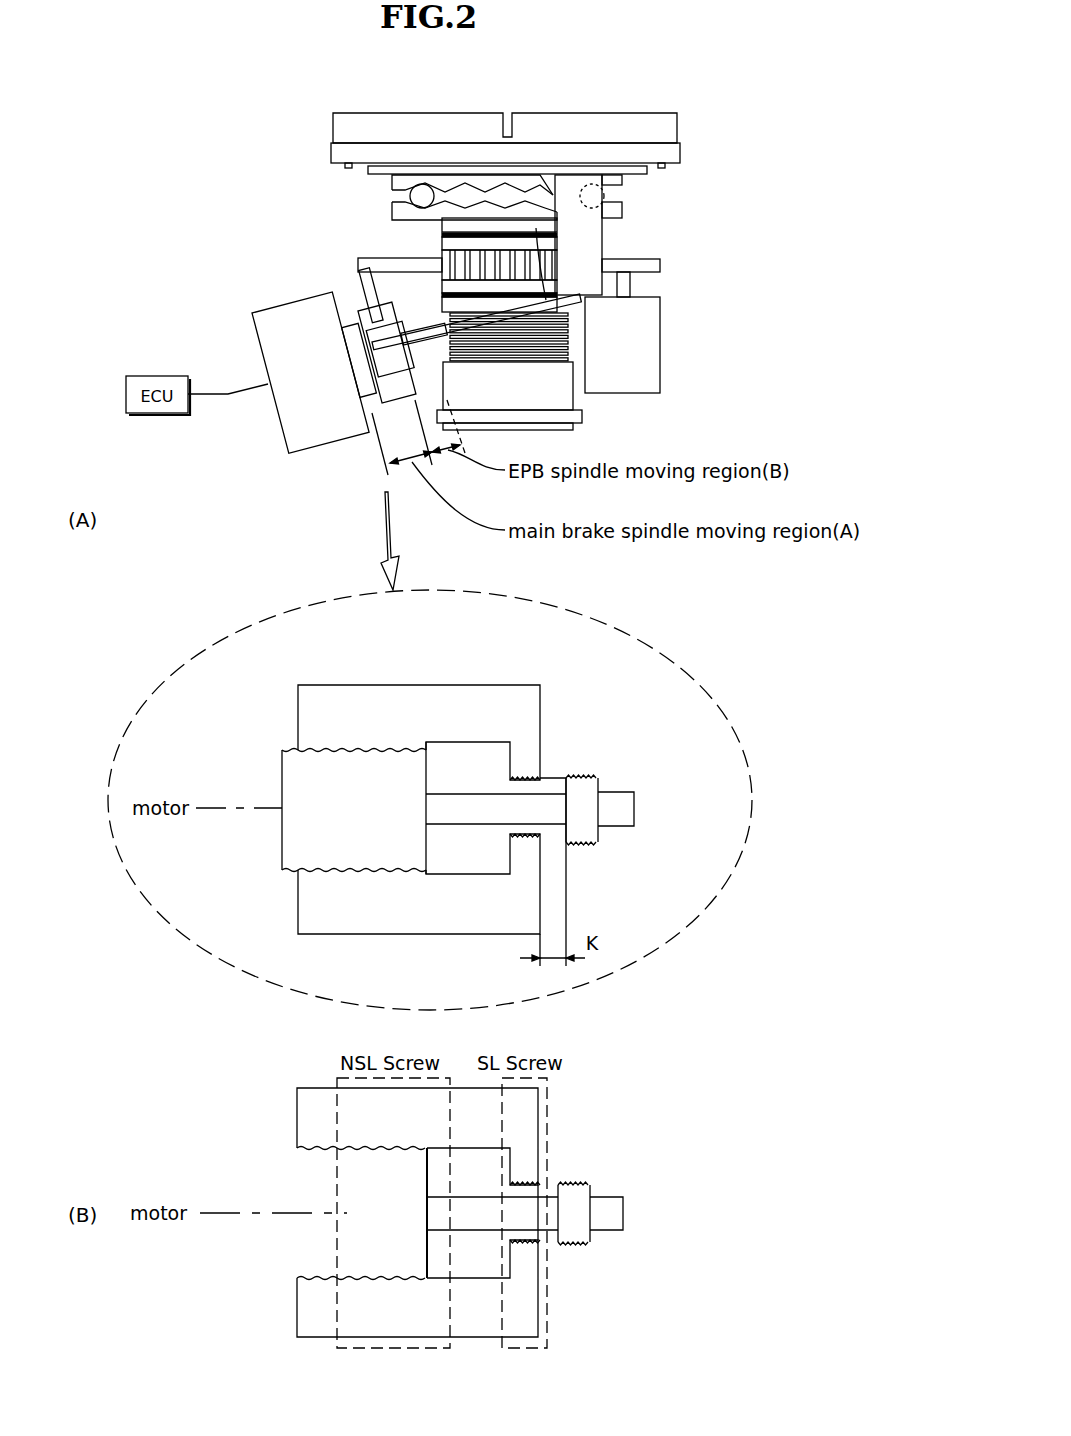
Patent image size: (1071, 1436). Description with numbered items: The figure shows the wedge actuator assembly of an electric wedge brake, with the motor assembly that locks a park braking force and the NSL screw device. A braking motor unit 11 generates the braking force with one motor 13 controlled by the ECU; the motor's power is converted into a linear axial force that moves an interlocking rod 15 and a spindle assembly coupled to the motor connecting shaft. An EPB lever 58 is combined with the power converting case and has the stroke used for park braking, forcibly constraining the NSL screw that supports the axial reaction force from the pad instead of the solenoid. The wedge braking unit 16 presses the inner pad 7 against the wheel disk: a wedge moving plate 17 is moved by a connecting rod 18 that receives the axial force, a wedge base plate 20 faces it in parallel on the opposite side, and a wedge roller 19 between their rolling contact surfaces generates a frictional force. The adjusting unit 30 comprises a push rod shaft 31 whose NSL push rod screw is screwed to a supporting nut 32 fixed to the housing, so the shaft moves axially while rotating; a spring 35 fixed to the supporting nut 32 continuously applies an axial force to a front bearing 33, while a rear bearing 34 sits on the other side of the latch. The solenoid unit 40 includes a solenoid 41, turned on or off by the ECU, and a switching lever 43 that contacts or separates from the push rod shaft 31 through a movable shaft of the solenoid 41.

The inner pad 7 is at (535, 127).
The wedge braking unit 16 is at (587, 229).
The wedge moving plate 17 is at (617, 182).
The wedge roller 19 is at (604, 196).
The wedge base plate 20 is at (620, 212).
The connecting rod 18 is at (593, 237).
The solenoid unit 40 is at (684, 322).
The switching lever 43 is at (660, 266).
The solenoid 41 is at (655, 305).
The adjusting unit 30 is at (611, 378).
The rear bearing 34 is at (495, 292).
The push rod shaft 31 is at (536, 228).
The front bearing 33 is at (508, 356).
The spring 35 is at (492, 350).
The supporting nut 32 is at (530, 400).
The braking motor unit 11 is at (417, 414).
The motor 13 is at (300, 437).
The interlocking rod 15 is at (415, 357).
The EPB lever 58 is at (358, 262).